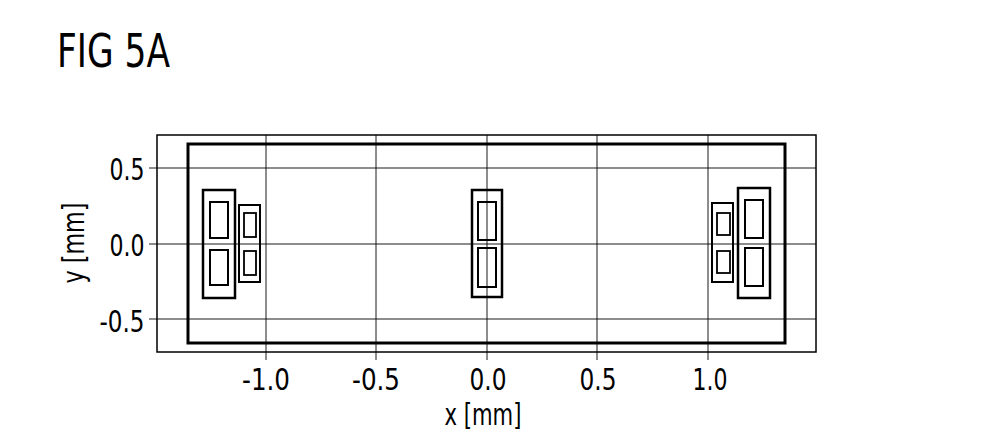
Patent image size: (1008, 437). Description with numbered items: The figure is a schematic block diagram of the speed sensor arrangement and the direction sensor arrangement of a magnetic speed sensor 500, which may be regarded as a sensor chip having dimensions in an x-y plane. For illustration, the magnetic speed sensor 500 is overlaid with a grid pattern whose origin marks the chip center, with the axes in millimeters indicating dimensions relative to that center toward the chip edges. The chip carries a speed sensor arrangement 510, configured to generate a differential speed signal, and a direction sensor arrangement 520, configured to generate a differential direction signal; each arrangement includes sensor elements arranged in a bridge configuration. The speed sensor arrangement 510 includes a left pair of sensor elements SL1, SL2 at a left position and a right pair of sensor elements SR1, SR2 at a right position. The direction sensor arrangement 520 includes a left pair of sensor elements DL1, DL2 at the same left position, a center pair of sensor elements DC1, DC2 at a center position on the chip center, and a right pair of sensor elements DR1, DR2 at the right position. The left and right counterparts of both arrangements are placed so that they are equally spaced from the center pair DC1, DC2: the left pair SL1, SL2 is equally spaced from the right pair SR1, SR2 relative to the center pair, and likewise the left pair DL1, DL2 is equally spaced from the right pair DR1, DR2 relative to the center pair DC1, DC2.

The magnetic speed sensor 500 is at (594, 144).
The speed sensor arrangement 510 is at (218, 190).
The direction sensor arrangement 520 is at (250, 205).
The left sensor element of speed sensor arrangement SL1 is at (210, 218).
The left sensor element of speed sensor arrangement SL2 is at (210, 270).
The right sensor element of speed sensor arrangement SR1 is at (763, 222).
The right sensor element of speed sensor arrangement SR2 is at (763, 272).
The left sensor element of direction sensor arrangement DL1 is at (257, 218).
The left sensor element of direction sensor arrangement DL2 is at (257, 260).
The center sensor element of direction sensor arrangement DC1 is at (496, 219).
The center sensor element of direction sensor arrangement DC2 is at (496, 266).
The right sensor element of direction sensor arrangement DR1 is at (717, 226).
The right sensor element of direction sensor arrangement DR2 is at (717, 262).